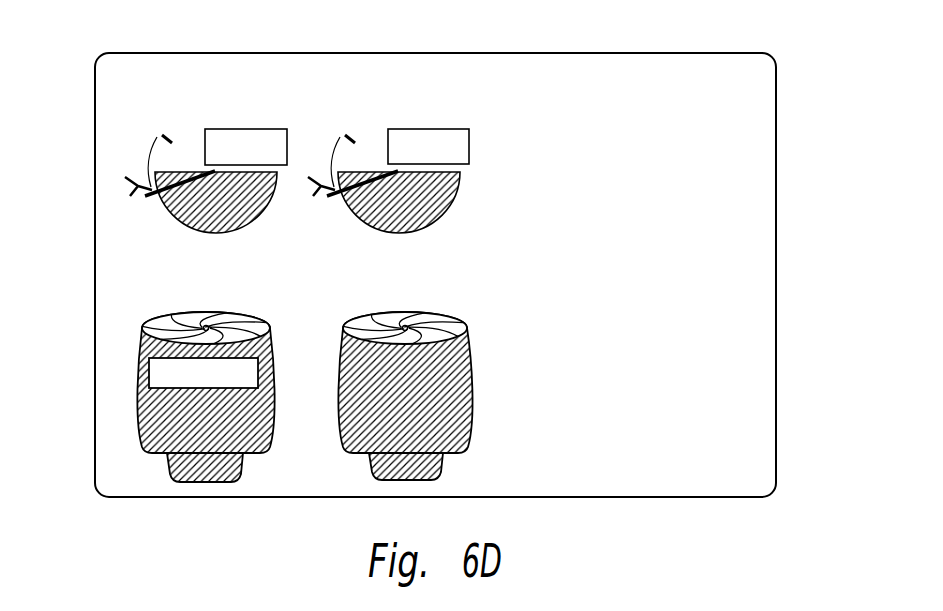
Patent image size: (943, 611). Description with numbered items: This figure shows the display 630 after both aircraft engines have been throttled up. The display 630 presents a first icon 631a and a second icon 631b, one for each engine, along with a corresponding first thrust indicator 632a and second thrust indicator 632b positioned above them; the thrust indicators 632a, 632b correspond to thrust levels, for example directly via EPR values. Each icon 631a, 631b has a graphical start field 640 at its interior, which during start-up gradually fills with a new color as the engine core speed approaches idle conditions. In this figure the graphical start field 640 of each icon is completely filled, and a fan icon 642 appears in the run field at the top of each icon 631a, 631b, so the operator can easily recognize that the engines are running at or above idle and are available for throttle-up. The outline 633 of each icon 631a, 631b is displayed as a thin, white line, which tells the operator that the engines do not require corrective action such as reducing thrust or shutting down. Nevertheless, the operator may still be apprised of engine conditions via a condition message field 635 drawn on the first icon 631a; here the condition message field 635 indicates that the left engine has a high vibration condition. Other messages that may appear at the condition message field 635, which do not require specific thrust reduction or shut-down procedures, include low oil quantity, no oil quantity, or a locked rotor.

The display 630 is at (770, 52).
The first icon 631a is at (146, 384).
The second icon 631b is at (476, 391).
The first thrust indicator 632a is at (150, 163).
The second thrust indicator 632b is at (459, 190).
The outline 633 is at (143, 439).
The condition message field 635 is at (142, 362).
The graphical start field 640 is at (140, 421).
The fan icon 642 is at (209, 315).